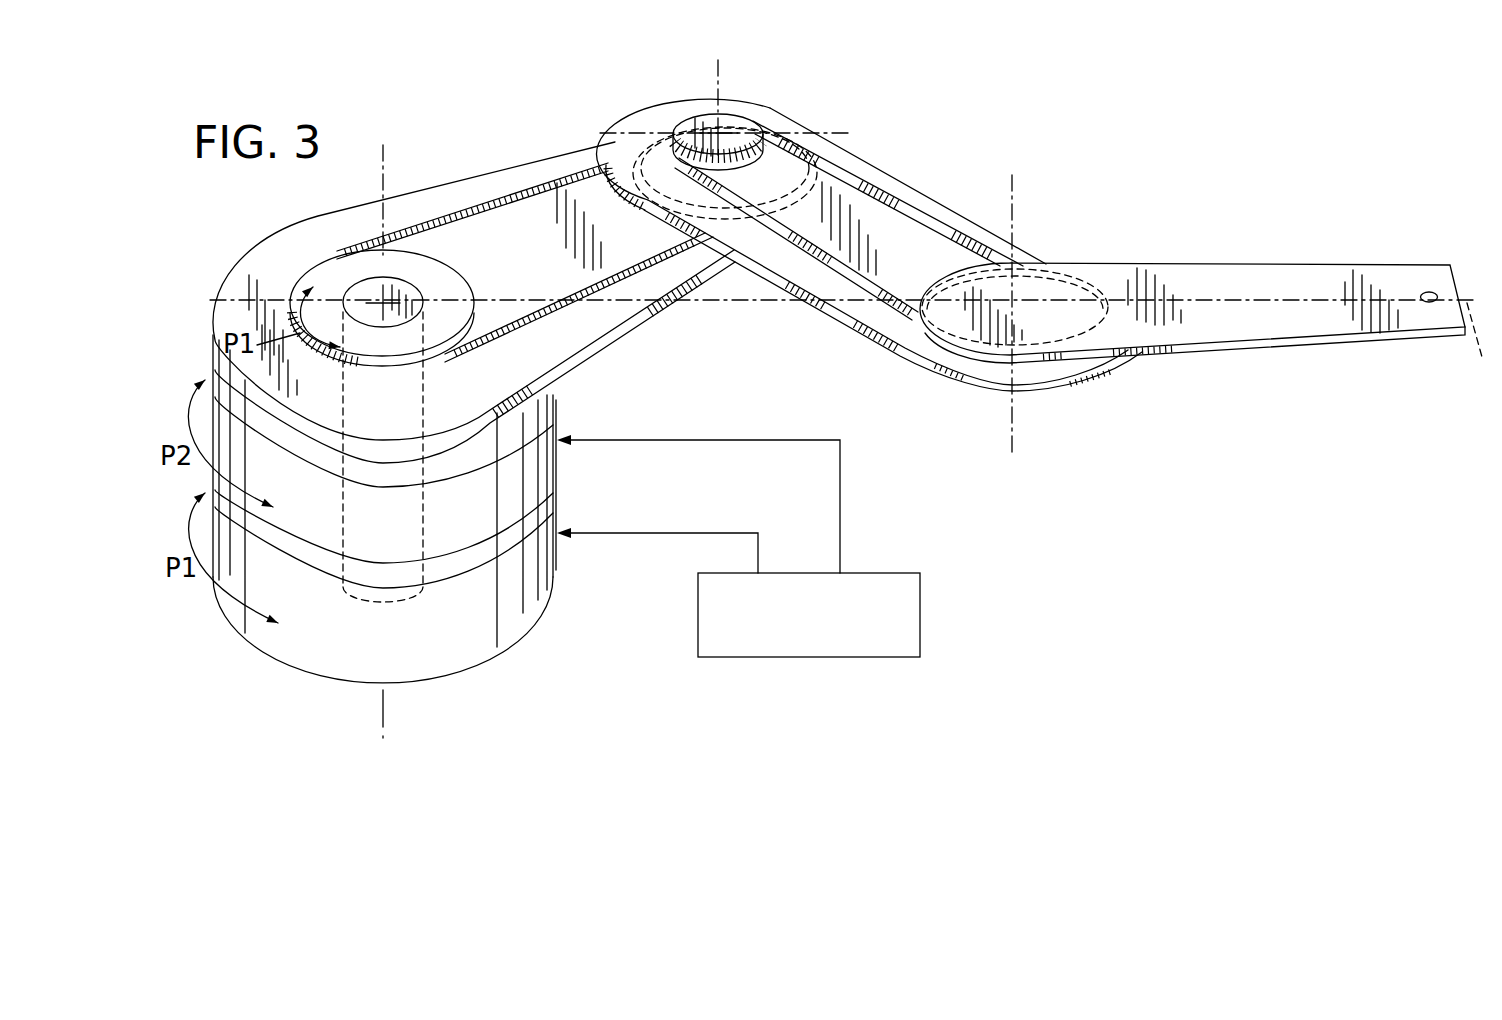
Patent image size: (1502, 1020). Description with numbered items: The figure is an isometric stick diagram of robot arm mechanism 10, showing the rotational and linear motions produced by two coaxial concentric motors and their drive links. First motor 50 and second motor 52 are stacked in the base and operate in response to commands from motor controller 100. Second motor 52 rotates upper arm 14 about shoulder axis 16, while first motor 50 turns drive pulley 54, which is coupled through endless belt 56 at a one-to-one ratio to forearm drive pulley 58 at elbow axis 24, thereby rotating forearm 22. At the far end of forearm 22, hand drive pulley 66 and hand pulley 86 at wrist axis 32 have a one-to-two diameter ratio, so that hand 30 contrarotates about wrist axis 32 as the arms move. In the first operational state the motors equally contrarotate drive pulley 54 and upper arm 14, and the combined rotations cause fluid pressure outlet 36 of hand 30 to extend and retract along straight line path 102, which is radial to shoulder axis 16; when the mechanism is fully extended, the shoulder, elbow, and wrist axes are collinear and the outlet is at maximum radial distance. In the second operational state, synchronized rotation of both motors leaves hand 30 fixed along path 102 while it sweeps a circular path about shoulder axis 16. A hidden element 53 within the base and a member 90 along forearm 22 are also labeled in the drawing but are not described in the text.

The robot arm mechanism 10 is at (268, 679).
The upper arm 14 is at (650, 312).
The shoulder axis 16 is at (383, 158).
The forearm 22 is at (867, 333).
The elbow axis 24 is at (718, 73).
The hand 30 is at (1370, 337).
The wrist axis 32 is at (1012, 192).
The fluid pressure outlet 36 is at (1428, 291).
The first motor 50 is at (517, 617).
The second motor 52 is at (553, 412).
The drive shaft 53 is at (430, 535).
The drive pulley 54 is at (428, 280).
The endless belt 56 is at (490, 205).
The forearm drive pulley 58 is at (680, 230).
The hand drive pulley 66 is at (743, 128).
The hand pulley 86 is at (1108, 302).
The second belt 90 is at (873, 187).
The motor controller 100 is at (920, 613).
The straight line path 102 is at (1471, 349).